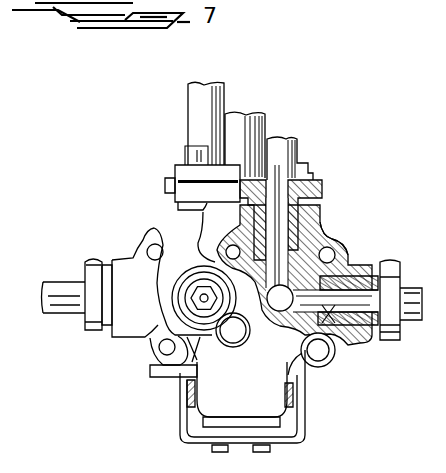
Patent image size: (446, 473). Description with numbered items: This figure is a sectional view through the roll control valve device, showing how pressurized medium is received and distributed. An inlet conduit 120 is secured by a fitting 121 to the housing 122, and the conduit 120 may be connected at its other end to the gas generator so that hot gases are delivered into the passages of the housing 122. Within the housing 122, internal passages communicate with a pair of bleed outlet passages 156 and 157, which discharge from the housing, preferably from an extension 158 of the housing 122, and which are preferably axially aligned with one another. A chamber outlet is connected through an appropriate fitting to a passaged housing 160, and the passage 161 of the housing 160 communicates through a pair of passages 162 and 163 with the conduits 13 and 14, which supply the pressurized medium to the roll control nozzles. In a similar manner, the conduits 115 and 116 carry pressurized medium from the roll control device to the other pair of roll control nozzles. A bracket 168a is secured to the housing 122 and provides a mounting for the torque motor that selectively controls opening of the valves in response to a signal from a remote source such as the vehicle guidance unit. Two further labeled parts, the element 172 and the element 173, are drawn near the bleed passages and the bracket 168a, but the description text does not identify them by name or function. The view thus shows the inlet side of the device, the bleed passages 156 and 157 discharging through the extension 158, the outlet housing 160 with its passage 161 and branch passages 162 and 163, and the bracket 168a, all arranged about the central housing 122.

The conduit 13 is at (322, 185).
The conduit 14 is at (408, 290).
The conduit 115 is at (63, 292).
The conduit 116 is at (188, 113).
The inlet conduit 120 is at (248, 132).
The fitting 121 is at (188, 173).
The housing 122 is at (180, 218).
The bleed outlet passage 156 is at (198, 393).
The bleed outlet passage 157 is at (283, 391).
The extension 158 is at (265, 402).
The passaged housing 160 is at (346, 262).
The passage 161 is at (268, 338).
The passage 162 is at (330, 240).
The passage 163 is at (352, 339).
The bracket 168a is at (184, 432).
The bracket 172 is at (190, 397).
The strip 173 is at (300, 395).